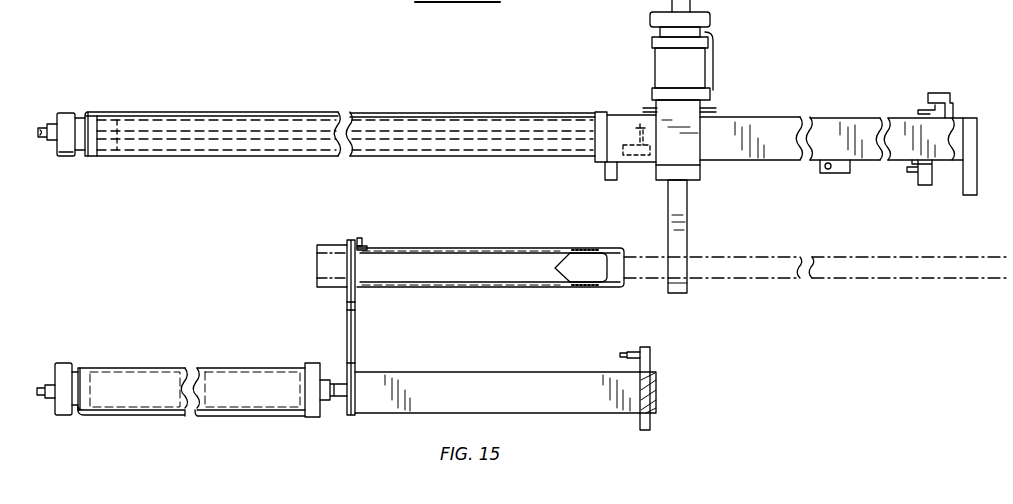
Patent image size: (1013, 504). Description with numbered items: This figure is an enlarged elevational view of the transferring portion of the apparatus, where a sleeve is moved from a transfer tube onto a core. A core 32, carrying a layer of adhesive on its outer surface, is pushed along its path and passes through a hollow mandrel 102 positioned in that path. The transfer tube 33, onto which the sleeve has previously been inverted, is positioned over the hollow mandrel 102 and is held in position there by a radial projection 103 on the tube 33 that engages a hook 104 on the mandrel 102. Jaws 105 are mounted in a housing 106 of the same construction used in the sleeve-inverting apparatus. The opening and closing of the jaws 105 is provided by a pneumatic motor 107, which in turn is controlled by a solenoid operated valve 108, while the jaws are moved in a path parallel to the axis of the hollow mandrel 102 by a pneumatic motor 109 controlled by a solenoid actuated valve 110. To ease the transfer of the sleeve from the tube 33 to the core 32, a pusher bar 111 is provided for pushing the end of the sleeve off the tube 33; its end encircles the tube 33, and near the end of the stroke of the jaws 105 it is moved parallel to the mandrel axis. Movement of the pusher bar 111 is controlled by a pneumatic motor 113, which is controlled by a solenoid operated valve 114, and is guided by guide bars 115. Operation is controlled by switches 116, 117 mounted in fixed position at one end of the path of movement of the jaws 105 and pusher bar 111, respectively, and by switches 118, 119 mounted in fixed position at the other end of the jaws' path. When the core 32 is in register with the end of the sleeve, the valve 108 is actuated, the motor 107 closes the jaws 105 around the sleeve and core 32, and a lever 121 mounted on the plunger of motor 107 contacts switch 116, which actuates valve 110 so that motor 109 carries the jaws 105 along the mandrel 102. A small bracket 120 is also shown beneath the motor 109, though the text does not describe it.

The core 32 is at (735, 260).
The transfer tube 33 is at (604, 252).
The hollow mandrel 102 is at (445, 252).
The radial projection 103 is at (364, 243).
The hook 104 is at (370, 248).
The jaws 105 is at (683, 204).
The housing 106 is at (693, 135).
The pneumatic motor 107 is at (694, 66).
The solenoid operated valve 108 is at (710, 22).
The pneumatic motor 109 is at (388, 116).
The solenoid actuated valve 110 is at (63, 113).
The pusher bar 111 is at (351, 340).
The pneumatic motor 113 is at (207, 382).
The solenoid operated valve 114 is at (63, 374).
The guide bars 115 is at (443, 382).
The switch 116 is at (626, 142).
The switch 117 is at (652, 359).
The switch 118 is at (928, 185).
The switch 119 is at (937, 82).
The bracket 120 is at (830, 174).
The lever 121 is at (642, 106).